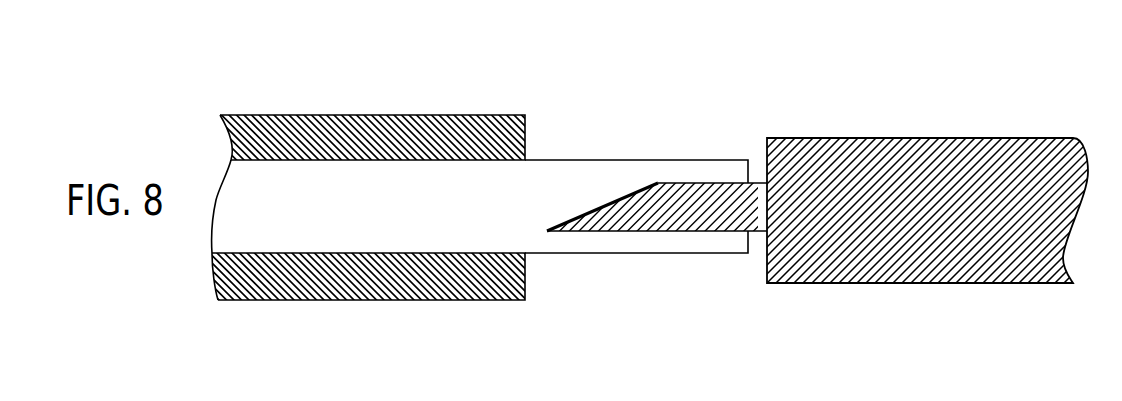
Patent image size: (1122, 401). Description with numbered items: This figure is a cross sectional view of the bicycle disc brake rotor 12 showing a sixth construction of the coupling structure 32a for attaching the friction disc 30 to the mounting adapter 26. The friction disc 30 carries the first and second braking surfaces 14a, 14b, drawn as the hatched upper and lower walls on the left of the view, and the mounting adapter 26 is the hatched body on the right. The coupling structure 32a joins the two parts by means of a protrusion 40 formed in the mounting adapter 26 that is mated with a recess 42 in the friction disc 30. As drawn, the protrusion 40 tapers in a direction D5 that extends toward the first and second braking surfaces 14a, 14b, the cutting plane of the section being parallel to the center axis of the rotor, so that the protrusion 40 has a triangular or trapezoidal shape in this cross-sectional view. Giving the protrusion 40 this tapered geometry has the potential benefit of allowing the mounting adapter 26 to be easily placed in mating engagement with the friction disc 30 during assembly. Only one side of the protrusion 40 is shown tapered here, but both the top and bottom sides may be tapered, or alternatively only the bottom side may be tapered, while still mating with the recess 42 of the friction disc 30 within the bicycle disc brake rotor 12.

The bicycle disc brake rotor 12 is at (1014, 72).
The first braking surface 14a is at (373, 114).
The second braking surface 14b is at (374, 301).
The mounting adapter 26 is at (950, 217).
The friction disc 30 is at (218, 310).
The coupling structure 32a is at (634, 138).
The protrusion 40 is at (543, 179).
The recess 42 is at (752, 181).
The direction D5 is at (655, 205).